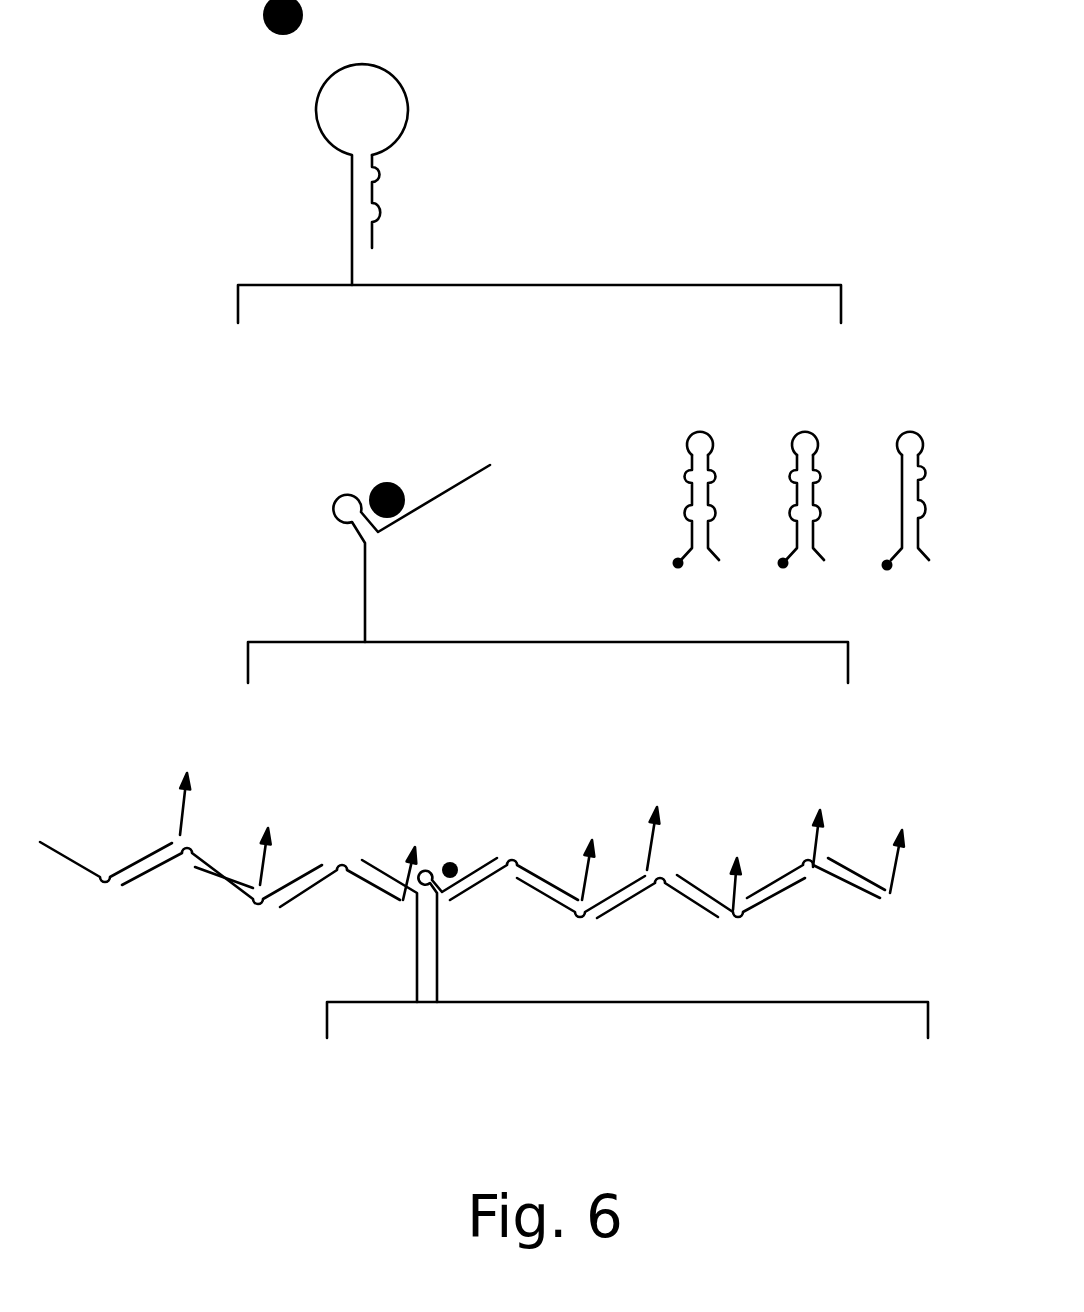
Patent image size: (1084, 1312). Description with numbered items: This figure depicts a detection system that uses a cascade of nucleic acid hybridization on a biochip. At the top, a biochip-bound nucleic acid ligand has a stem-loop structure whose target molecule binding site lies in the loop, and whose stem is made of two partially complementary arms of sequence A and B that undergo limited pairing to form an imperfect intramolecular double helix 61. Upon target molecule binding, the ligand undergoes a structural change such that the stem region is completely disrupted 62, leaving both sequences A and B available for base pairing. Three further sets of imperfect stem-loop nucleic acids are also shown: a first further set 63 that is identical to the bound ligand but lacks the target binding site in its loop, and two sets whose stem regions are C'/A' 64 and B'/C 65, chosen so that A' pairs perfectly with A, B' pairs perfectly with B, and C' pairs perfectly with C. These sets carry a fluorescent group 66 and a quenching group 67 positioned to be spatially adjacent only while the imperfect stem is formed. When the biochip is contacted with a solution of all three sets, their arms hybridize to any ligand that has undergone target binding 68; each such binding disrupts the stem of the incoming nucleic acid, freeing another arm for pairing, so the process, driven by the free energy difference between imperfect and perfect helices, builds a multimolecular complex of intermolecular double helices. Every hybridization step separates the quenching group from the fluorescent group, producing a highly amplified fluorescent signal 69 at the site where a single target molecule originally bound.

The imperfect intramolecular double helix 61 is at (539, 161).
The disrupted stem region 62 is at (548, 569).
The first further set of imperfect stem-loop nucleic acids 63 is at (909, 480).
The stem-loop nucleic acid with stem C'/A' 64 is at (805, 491).
The stem-loop nucleic acid with stem B'/C 65 is at (694, 491).
The fluorescent group 66 is at (946, 581).
The quenching group 67 is at (884, 585).
The hybridization of nucleic acid arms to the target-bound ligand 68 is at (484, 918).
The fluorescent signal 69 is at (196, 790).